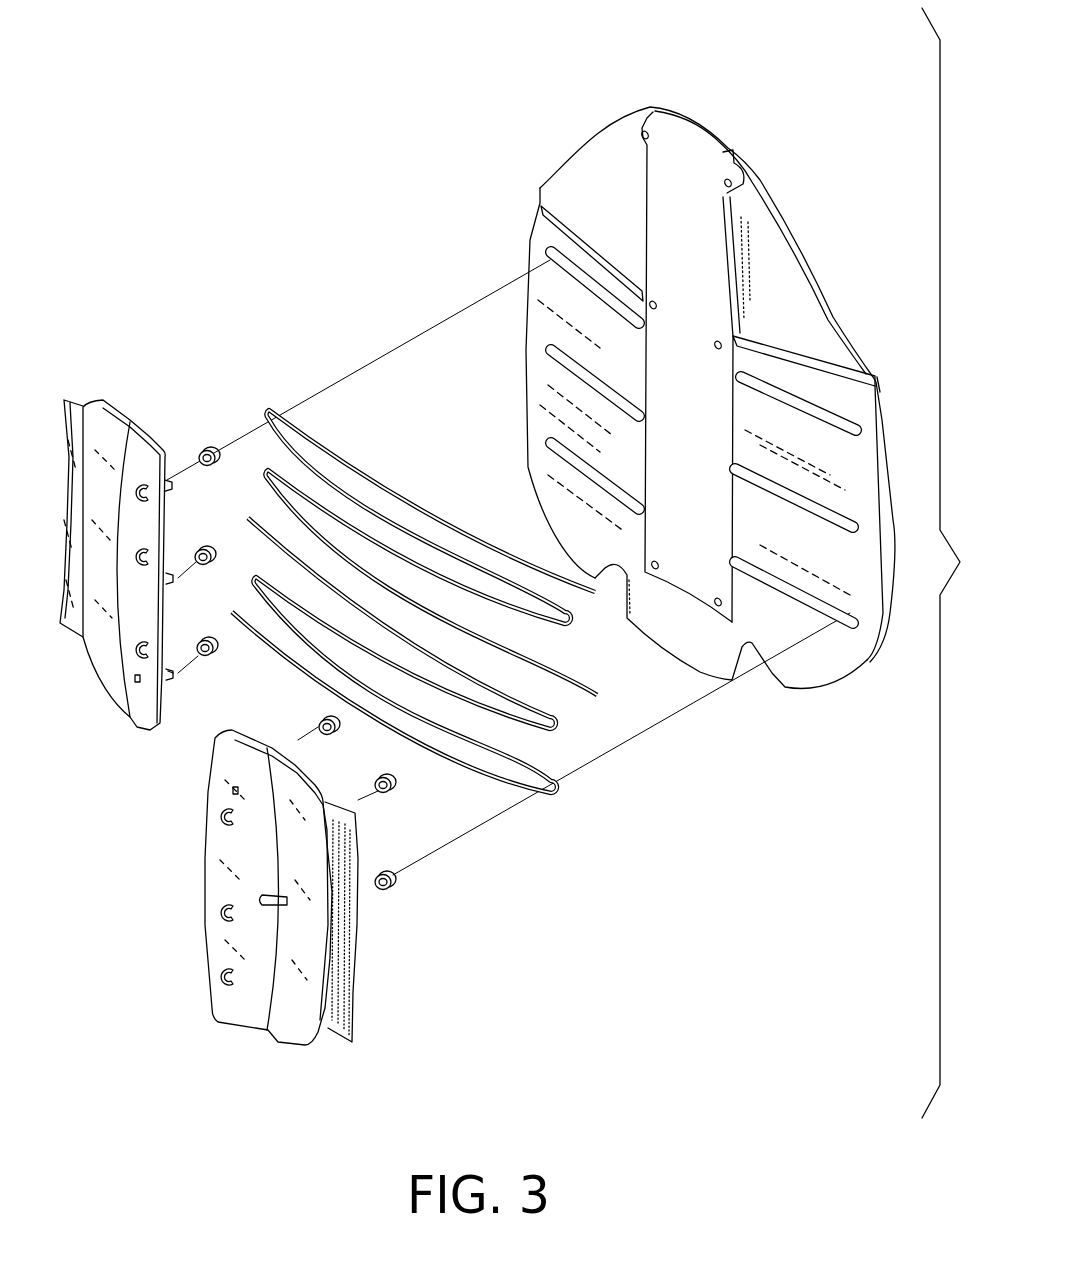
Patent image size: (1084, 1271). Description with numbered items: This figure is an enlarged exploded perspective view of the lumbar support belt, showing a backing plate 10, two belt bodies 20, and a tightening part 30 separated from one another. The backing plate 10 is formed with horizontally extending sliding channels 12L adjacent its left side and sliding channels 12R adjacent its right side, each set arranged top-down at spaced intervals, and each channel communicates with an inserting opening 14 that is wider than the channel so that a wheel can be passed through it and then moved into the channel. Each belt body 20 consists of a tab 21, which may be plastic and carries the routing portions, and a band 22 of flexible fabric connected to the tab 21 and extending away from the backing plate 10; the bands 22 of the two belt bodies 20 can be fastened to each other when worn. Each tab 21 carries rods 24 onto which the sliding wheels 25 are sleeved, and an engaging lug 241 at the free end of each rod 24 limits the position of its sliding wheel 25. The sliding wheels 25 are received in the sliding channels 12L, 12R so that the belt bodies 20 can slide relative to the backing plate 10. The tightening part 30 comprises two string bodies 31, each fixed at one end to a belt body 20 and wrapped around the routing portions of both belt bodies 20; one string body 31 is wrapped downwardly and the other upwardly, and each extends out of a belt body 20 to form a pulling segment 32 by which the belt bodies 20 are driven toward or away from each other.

The backing plate 10 is at (710, 349).
The sliding channel 12L is at (592, 303).
The sliding channel 12R is at (793, 393).
The inserting opening 14 is at (640, 318).
The belt body 20 is at (262, 735).
The tab 21 is at (292, 1033).
The band 22 is at (342, 985).
The rod 24 is at (223, 692).
The engaging lug 241 is at (178, 682).
The sliding wheel 25 is at (205, 428).
The tightening part 30 is at (424, 607).
The string body 31 is at (424, 618).
The pulling segment 32 is at (248, 520).